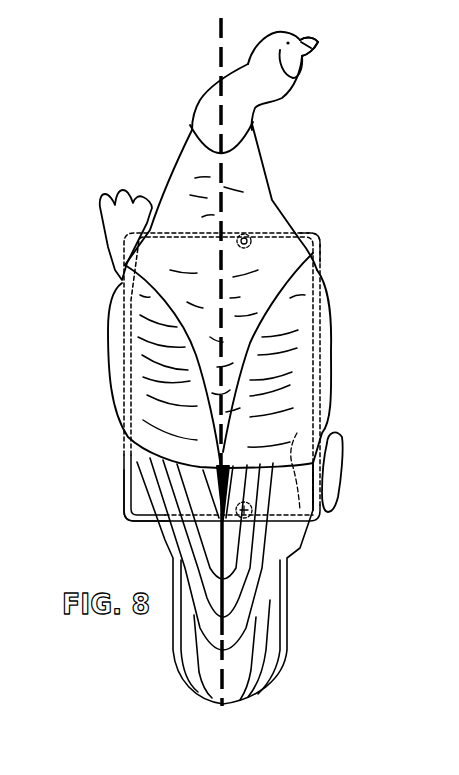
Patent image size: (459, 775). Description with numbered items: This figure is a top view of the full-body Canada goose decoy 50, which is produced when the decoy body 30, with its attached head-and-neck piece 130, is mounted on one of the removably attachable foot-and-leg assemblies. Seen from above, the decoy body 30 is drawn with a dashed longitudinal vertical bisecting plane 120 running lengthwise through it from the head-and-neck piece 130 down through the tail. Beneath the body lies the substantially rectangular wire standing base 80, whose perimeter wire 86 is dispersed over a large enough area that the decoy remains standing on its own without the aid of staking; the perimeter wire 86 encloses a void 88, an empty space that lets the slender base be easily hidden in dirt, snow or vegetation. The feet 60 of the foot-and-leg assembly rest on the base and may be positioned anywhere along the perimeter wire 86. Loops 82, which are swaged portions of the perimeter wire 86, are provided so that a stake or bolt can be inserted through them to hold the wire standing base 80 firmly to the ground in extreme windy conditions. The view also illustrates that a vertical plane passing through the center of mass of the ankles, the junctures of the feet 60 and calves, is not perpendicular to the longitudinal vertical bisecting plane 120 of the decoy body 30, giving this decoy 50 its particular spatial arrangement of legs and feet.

The decoy body 30 is at (167, 180).
The full-body Canada goose decoy 50 is at (333, 160).
The feet 60 is at (112, 223).
The wire standing base 80 is at (105, 530).
The loops 82 is at (247, 238).
The perimeter wire 86 is at (316, 237).
The void 88 is at (140, 502).
The longitudinal vertical bisecting plane 120 is at (218, 27).
The head-and-neck piece 130 is at (327, 35).